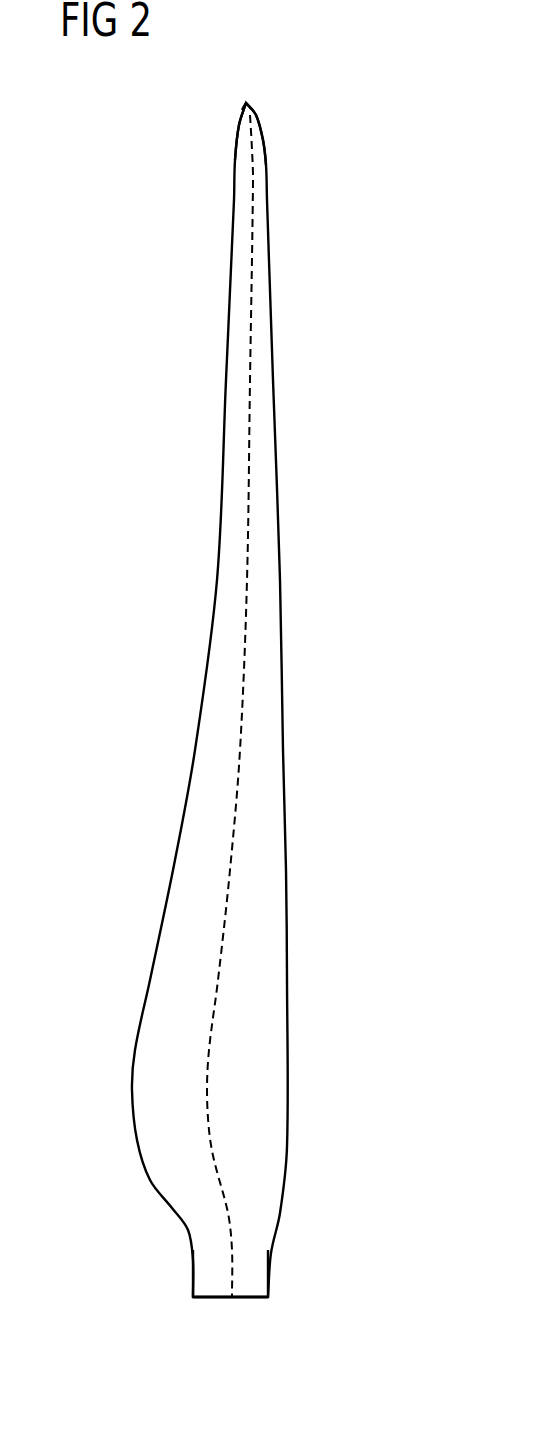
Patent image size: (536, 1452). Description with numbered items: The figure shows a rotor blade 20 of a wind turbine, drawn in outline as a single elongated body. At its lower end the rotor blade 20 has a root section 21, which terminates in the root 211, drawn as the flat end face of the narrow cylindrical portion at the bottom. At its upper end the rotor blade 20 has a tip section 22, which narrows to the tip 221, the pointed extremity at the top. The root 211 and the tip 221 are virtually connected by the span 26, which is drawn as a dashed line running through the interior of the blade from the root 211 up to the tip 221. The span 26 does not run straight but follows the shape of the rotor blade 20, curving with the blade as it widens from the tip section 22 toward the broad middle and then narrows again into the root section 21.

The rotor blade 20 is at (362, 444).
The root section 21 is at (260, 1257).
The root 211 is at (218, 1297).
The tip section 22 is at (240, 125).
The tip 221 is at (246, 103).
The span 26 is at (242, 750).